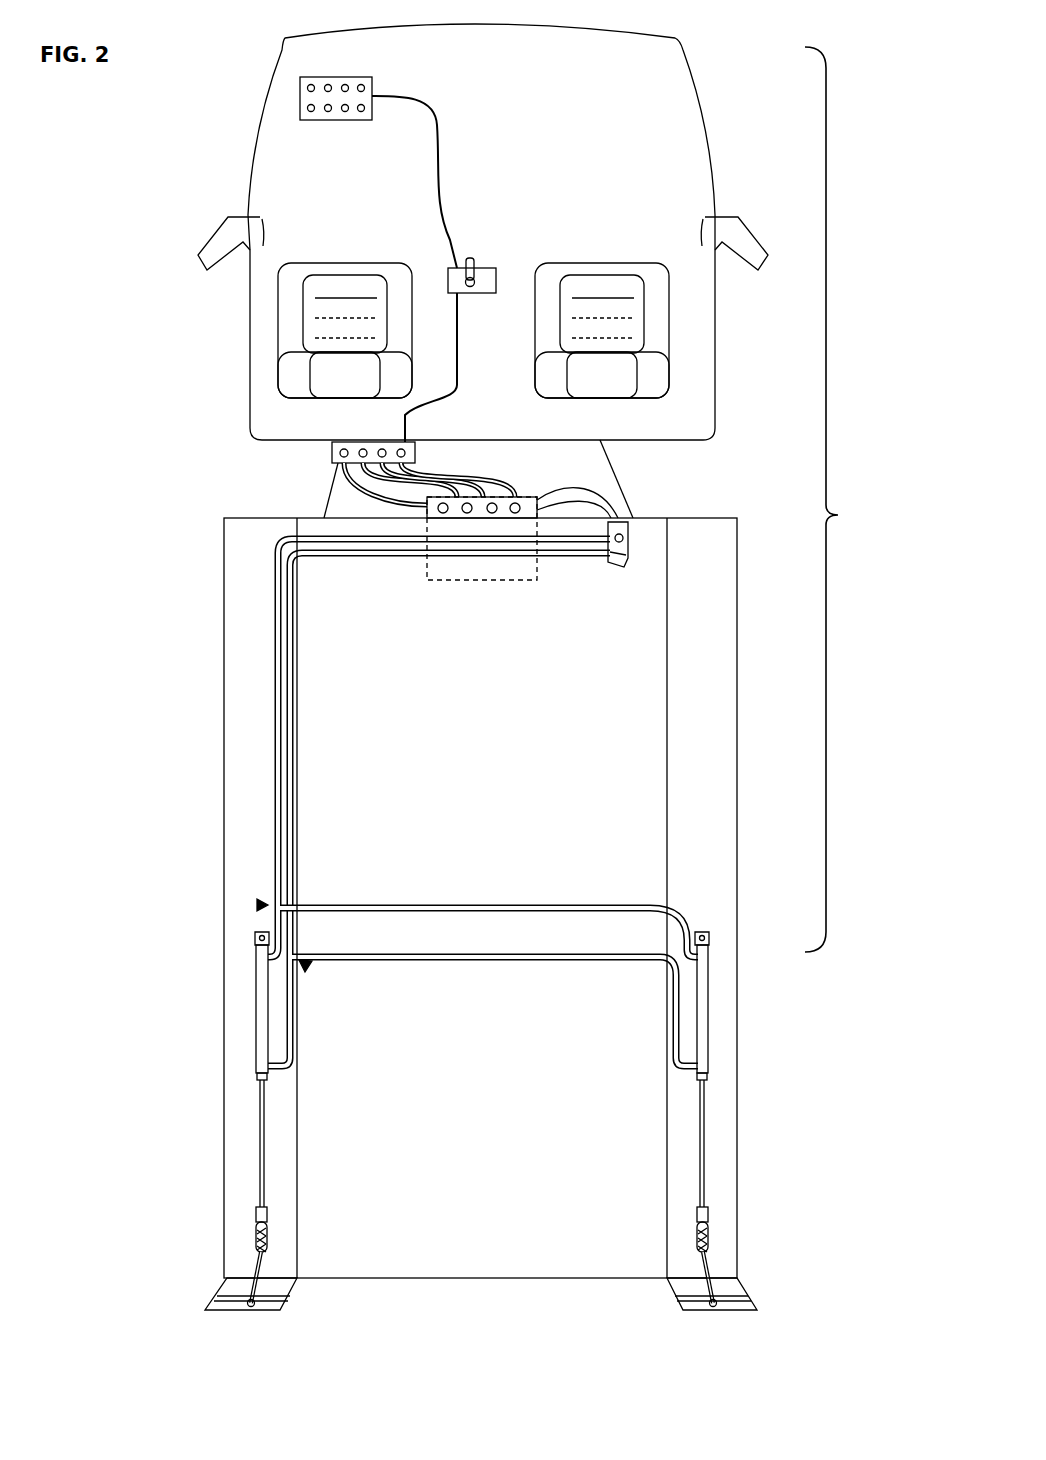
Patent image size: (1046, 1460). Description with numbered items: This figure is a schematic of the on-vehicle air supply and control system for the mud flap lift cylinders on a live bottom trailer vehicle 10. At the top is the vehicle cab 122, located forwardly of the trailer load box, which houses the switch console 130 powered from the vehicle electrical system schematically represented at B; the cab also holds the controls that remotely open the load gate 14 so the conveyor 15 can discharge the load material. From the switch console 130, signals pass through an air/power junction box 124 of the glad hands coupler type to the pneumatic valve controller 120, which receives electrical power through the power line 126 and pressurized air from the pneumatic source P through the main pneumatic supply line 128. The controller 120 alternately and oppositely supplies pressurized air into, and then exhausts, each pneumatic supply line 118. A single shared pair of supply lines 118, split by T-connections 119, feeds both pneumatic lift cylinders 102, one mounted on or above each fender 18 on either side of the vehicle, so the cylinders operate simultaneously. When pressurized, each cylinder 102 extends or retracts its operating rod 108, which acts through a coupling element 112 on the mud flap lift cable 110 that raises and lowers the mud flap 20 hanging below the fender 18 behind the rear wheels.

The live bottom trailer vehicle 10 is at (848, 499).
The load gate 14 is at (475, 1286).
The conveyor 15 is at (478, 479).
The fender 18 is at (722, 885).
The mud flap 20 is at (232, 1290).
The pneumatic lift cylinder 102 is at (262, 992).
The operating rod 108 is at (257, 1098).
The mud flap lift cable 110 is at (255, 1268).
The spring coupling 112 is at (668, 838).
The pneumatic supply line 118 is at (287, 742).
The T-connection 119 is at (260, 904).
The pneumatic valve controller 120 is at (630, 567).
The vehicle cab 122 is at (683, 86).
The air/power junction box 124 is at (332, 452).
The power line 126 is at (563, 510).
The main pneumatic supply line 128 is at (615, 496).
The switch console 130 is at (483, 268).
The vehicle electrical system B is at (362, 77).
The pneumatic source P is at (455, 585).